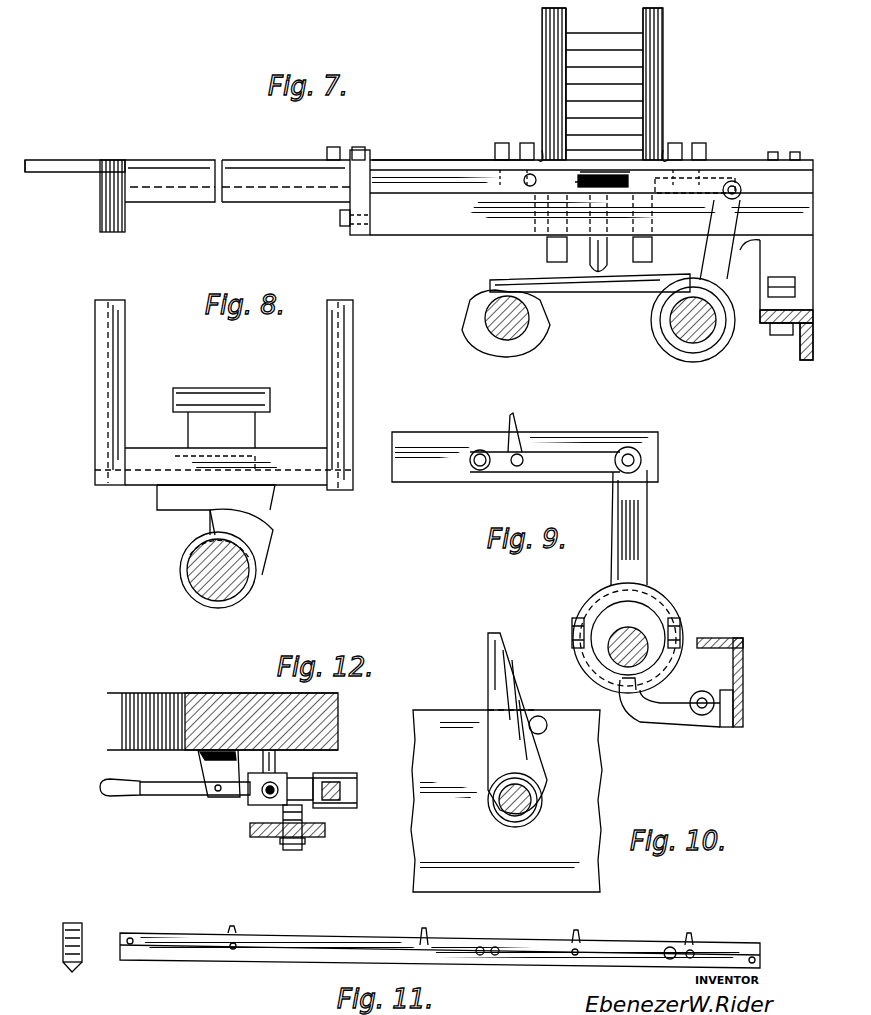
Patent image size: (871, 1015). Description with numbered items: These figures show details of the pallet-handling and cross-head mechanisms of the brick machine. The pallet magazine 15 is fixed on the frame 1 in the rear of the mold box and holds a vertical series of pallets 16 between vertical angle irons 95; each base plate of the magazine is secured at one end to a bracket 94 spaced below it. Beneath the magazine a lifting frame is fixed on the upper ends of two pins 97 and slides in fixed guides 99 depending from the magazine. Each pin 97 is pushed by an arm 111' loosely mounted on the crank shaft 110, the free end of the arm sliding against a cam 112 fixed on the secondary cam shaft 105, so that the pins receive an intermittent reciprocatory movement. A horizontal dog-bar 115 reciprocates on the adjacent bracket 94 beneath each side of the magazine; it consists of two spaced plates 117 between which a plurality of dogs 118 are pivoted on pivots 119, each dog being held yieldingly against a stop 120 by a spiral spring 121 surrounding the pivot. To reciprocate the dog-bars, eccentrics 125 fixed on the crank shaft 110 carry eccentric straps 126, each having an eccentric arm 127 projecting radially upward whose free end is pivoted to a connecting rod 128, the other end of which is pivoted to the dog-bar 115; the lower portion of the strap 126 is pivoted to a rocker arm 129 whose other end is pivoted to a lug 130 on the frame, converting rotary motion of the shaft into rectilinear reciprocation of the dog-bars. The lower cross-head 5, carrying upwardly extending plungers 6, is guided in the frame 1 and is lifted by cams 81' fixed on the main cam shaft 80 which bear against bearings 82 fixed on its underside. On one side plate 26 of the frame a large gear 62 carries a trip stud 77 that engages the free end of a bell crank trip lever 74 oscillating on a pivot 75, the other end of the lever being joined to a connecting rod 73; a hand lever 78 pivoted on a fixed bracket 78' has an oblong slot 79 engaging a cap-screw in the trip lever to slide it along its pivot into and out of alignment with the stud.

In FIG. 8, the fixed frame 1 is at (224, 395).
In FIG. 8, the cross-head 5 is at (224, 466).
In FIG. 8, the plungers 6 is at (217, 420).
In FIG. 7, the pallet magazine 15 is at (662, 100).
In FIG. 7, the pallets 16 is at (640, 73).
In FIG. 12, the side plates 26 is at (218, 700).
In FIG. 12, the gear 62 is at (325, 836).
In FIG. 12, the connecting rod 73 is at (357, 792).
In FIG. 12, the bell crank trip lever 74 is at (305, 776).
In FIG. 12, the pivot 75 is at (268, 762).
In FIG. 12, the trip stud 77 is at (290, 848).
In FIG. 12, the hand lever 78 is at (175, 799).
In FIG. 12, the fixed bracket 78' is at (219, 803).
In FIG. 12, the oblong slot 79 is at (265, 798).
In FIG. 8, the main cam shaft 80 is at (248, 590).
In FIG. 8, the cams 81' is at (260, 542).
In FIG. 8, the bearings 82 is at (210, 512).
In FIG. 7, the bracket 94 is at (418, 168).
In FIG. 7, the angle irons 95 is at (643, 14).
In FIG. 7, the pins 97 is at (590, 260).
In FIG. 7, the fixed guides 99 is at (547, 249).
In FIG. 7, the secondary cam shaft 105 is at (490, 310).
In FIG. 7, the crank shaft 110 is at (702, 342).
In FIG. 9, the crank shaft 110 is at (640, 630).
In FIG. 7, the arm 111' is at (590, 295).
In FIG. 7, the cam 112 is at (540, 340).
In FIG. 7, the dog-bar 115 is at (460, 188).
In FIG. 9, the dog-bar 115 is at (428, 436).
In FIG. 11, the dog-bar 115 is at (92, 962).
In FIG. 10, the plates 117 is at (598, 862).
In FIG. 11, the plates 117 is at (70, 966).
In FIG. 9, the dogs 118 is at (518, 418).
In FIG. 10, the dogs 118 is at (510, 683).
In FIG. 11, the dogs 118 is at (78, 924).
In FIG. 11, the pivots 119 is at (234, 950).
In FIG. 10, the stop 120 is at (545, 716).
In FIG. 10, the spiral spring 121 is at (545, 822).
In FIG. 9, the eccentrics 125 is at (596, 608).
In FIG. 7, the eccentric strap 126 is at (726, 292).
In FIG. 9, the eccentric strap 126 is at (598, 600).
In FIG. 7, the eccentric arm 127 is at (730, 258).
In FIG. 9, the eccentric arm 127 is at (650, 527).
In FIG. 9, the connecting rod 128 is at (562, 468).
In FIG. 9, the rocker arm 129 is at (668, 720).
In FIG. 9, the lug 130 is at (728, 728).